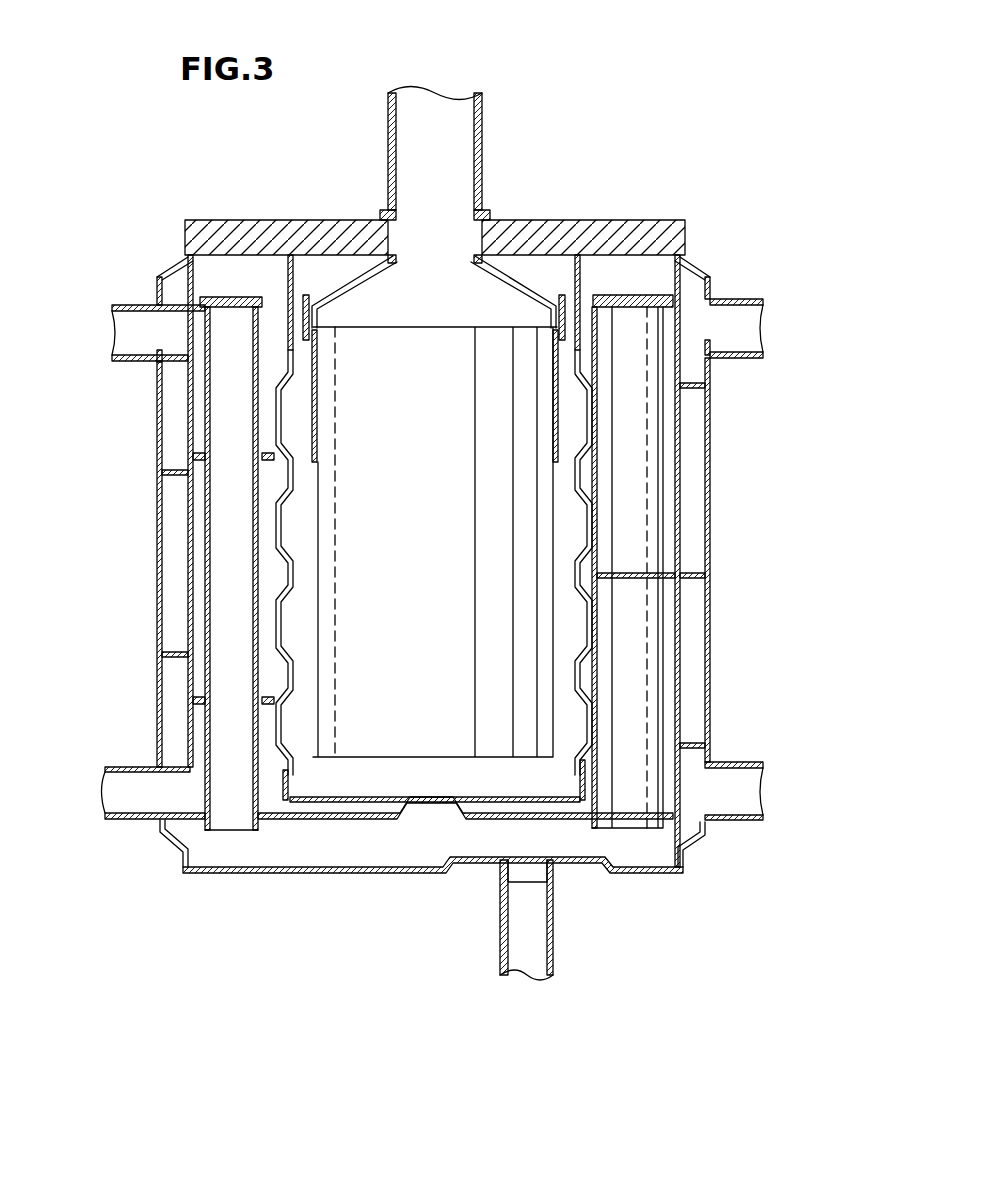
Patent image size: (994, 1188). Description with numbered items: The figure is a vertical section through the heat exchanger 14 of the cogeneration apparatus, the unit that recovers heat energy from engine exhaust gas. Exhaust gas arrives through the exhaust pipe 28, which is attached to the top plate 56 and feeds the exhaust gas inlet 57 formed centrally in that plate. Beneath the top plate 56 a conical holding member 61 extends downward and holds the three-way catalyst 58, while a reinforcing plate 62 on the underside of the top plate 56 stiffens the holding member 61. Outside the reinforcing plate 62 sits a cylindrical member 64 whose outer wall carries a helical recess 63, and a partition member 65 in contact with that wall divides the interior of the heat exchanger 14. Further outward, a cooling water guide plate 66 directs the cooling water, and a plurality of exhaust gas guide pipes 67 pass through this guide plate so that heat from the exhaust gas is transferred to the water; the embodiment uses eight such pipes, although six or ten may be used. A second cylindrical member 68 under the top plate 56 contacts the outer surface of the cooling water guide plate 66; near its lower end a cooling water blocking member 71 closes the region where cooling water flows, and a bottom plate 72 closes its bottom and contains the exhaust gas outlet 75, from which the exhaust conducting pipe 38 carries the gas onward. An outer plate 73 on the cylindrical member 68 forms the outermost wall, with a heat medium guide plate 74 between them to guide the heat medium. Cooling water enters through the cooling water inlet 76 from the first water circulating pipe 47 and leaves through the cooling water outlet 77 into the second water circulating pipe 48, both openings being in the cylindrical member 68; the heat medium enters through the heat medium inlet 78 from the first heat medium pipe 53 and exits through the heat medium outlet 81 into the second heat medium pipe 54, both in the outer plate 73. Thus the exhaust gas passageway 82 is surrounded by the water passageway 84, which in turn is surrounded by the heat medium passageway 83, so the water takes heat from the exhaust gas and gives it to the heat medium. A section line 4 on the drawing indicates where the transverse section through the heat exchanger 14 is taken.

The heat exchanger 14 is at (608, 78).
The exhaust pipe 28 is at (412, 100).
The exhaust conducting pipe 38 is at (528, 980).
The first water circulating pipe 47 is at (112, 790).
The second water circulating pipe 48 is at (120, 320).
The first heat medium pipe 53 is at (760, 800).
The second heat medium pipe 54 is at (760, 320).
The top plate 56 is at (547, 221).
The exhaust gas inlet 57 is at (470, 240).
The three-way catalyst 58 is at (378, 760).
The holding member 61 is at (370, 285).
The reinforcing plate 62 is at (290, 300).
The helical recess 63 is at (290, 700).
The cylindrical member 64 is at (265, 297).
The partition member 65 is at (560, 800).
The cooling water guide plate 66 is at (218, 297).
The exhaust gas guide pipes 67 is at (205, 298).
The cylindrical member 68 is at (190, 548).
The cooling water blocking member 71 is at (388, 820).
The bottom plate 72 is at (427, 873).
The outer plate 73 is at (160, 725).
The heat medium guide plate 74 is at (175, 472).
The exhaust gas outlet 75 is at (537, 880).
The cooling water inlet 76 is at (165, 840).
The cooling water outlet 77 is at (165, 350).
The heat medium inlet 78 is at (700, 835).
The heat medium outlet 81 is at (712, 345).
The exhaust gas passageway 82 is at (233, 812).
The heat medium passageway 83 is at (278, 800).
The water passageway 84 is at (172, 737).
The section line 4- 4 is at (85, 380).